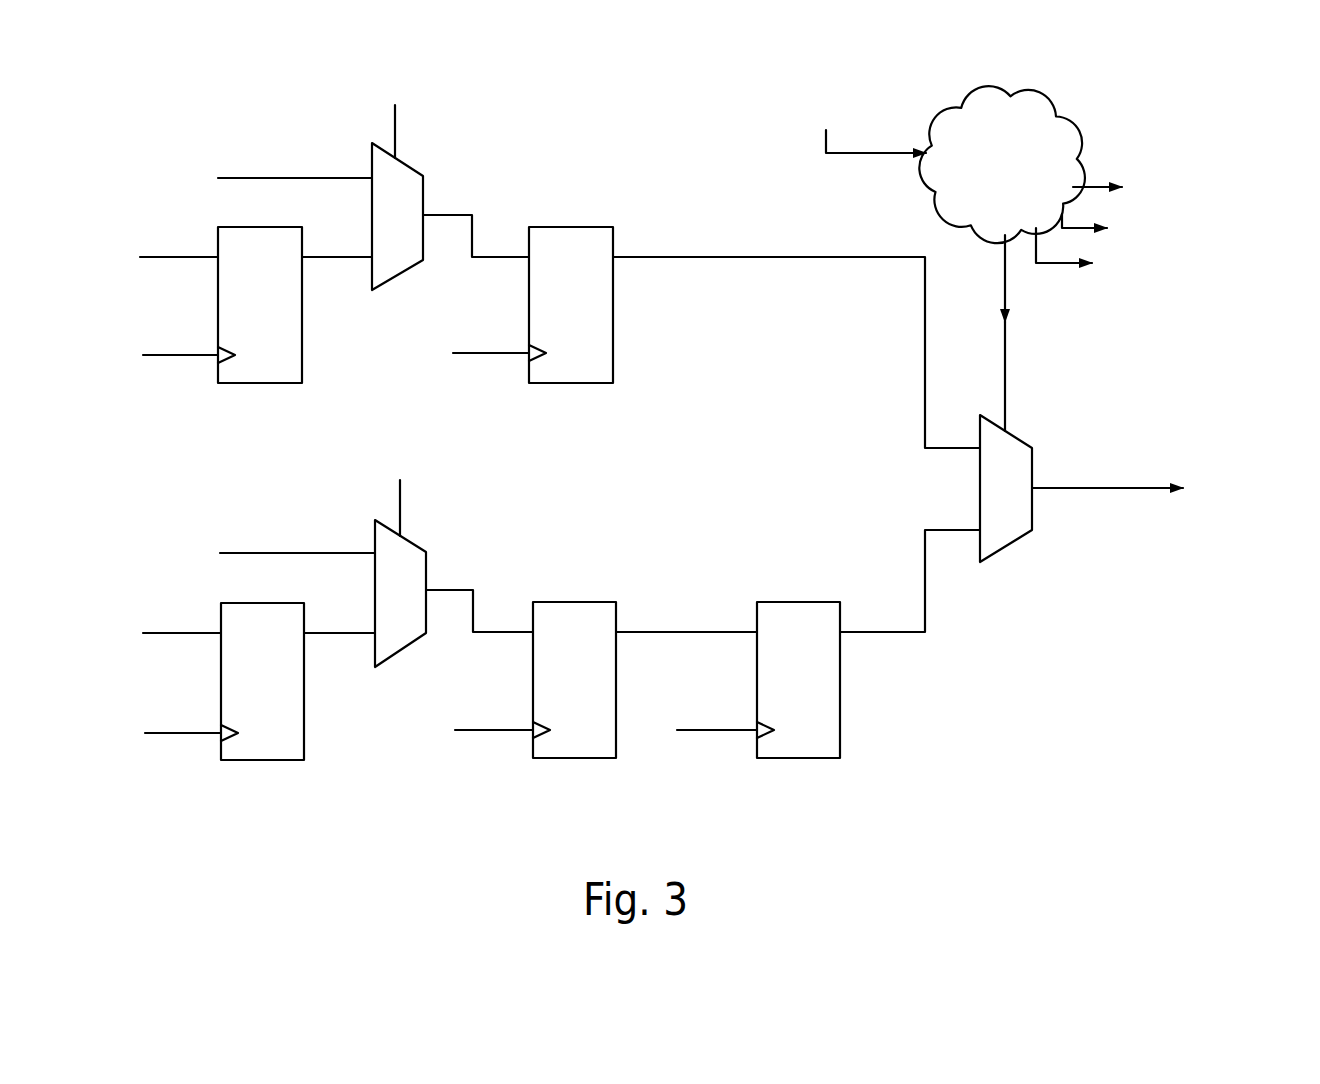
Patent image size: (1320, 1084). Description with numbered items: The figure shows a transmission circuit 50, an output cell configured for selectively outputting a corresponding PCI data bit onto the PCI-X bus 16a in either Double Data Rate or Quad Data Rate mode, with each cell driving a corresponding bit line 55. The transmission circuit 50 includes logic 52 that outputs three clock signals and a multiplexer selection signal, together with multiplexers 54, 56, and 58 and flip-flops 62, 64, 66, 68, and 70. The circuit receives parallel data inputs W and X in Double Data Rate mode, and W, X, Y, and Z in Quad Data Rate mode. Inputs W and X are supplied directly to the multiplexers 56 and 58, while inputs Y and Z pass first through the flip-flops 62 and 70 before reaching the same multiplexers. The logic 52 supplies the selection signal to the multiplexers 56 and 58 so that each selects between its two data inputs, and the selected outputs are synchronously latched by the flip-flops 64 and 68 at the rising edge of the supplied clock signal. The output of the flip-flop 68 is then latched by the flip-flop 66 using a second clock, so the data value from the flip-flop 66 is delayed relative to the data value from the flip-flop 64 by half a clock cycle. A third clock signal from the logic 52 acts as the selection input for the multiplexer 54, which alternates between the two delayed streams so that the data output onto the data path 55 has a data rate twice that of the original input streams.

The transmission circuit 50 is at (988, 700).
The logic 52 is at (1015, 197).
The multiplexer 54 is at (1017, 533).
The bit line 55 is at (1123, 492).
The multiplexer 56 is at (405, 268).
The multiplexer 58 is at (407, 648).
The flip-flop 62 is at (259, 378).
The flip-flop 64 is at (575, 375).
The flip-flop 66 is at (797, 748).
The flip-flop 68 is at (578, 752).
The flip-flop 70 is at (263, 755).
The PCI-X bus 16a is at (1233, 489).